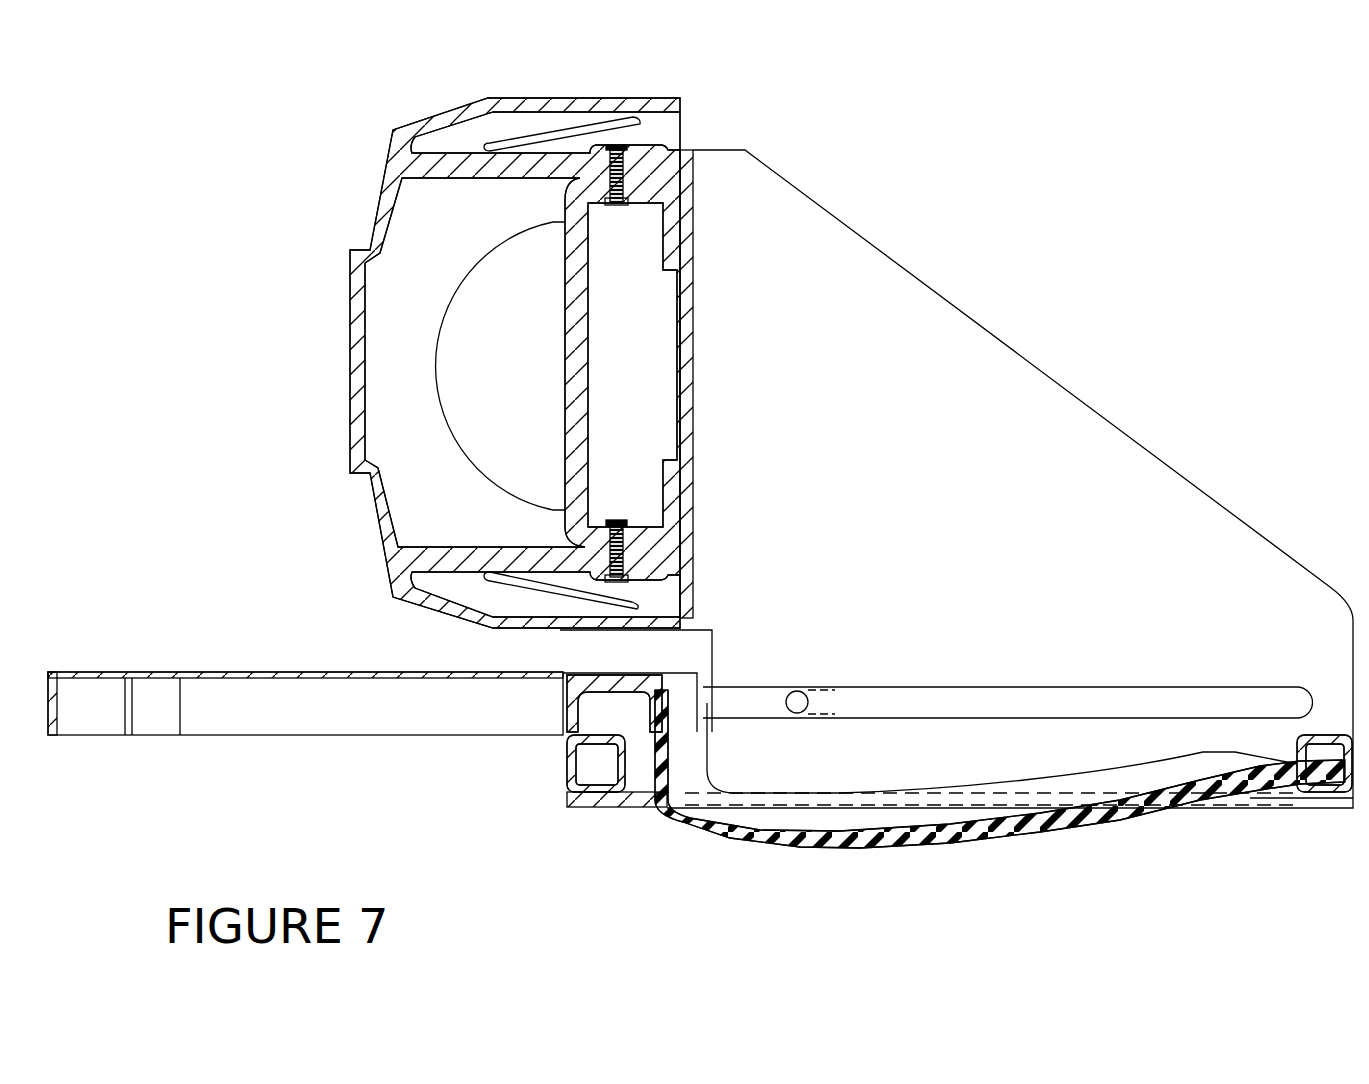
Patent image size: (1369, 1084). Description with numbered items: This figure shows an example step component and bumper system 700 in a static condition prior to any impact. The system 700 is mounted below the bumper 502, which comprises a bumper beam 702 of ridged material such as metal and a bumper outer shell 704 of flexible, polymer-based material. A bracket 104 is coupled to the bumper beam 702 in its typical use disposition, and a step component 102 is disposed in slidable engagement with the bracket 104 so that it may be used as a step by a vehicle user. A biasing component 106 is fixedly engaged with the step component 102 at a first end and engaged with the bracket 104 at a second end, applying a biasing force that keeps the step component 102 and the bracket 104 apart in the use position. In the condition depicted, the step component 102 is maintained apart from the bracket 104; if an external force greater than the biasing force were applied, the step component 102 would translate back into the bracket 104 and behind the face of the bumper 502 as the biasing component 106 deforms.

The step component and bumper system 700 is at (1236, 157).
The bracket 104 is at (1030, 345).
The bumper outer shell 704 is at (383, 207).
The bumper 502 is at (343, 335).
The bumper beam 702 is at (560, 367).
The step component 102 is at (157, 750).
The biasing component 106 is at (963, 863).